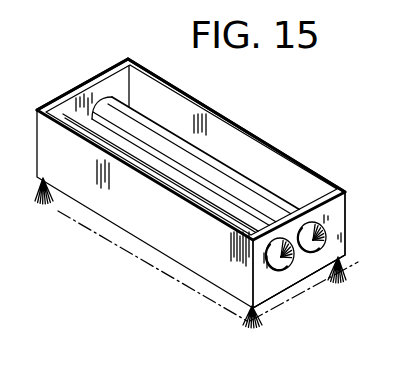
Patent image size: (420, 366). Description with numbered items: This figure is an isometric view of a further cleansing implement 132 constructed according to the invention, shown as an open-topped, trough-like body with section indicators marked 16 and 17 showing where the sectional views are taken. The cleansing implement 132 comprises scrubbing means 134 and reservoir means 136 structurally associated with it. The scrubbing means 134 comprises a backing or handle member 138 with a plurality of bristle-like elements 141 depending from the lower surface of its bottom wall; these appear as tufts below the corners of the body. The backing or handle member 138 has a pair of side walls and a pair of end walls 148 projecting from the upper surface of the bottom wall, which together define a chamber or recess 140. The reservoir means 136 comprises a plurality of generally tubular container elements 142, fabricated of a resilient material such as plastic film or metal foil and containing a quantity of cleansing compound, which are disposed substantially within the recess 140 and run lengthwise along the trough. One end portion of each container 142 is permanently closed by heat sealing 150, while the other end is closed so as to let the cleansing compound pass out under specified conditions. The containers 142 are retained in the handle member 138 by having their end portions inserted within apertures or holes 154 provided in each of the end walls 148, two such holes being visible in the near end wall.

The cleansing implement 132 is at (248, 130).
The scrubbing means 134 is at (350, 198).
The reservoir means 136 is at (136, 97).
The backing or handle member 138 is at (331, 183).
The recess or opening 140 is at (218, 125).
The bristle-like elements 141 is at (241, 315).
The container elements 142 is at (135, 155).
The end walls 148 is at (85, 93).
The heat sealing 150 is at (283, 272).
The apertures or holes 154 is at (131, 100).
The section line 16- 16 is at (128, 211).
The section line 17- 17 is at (37, 58).